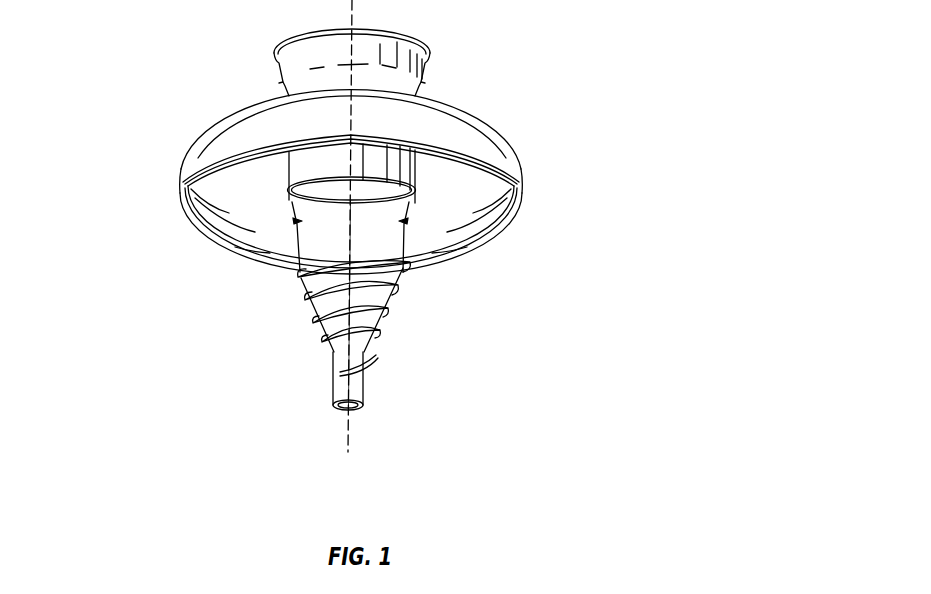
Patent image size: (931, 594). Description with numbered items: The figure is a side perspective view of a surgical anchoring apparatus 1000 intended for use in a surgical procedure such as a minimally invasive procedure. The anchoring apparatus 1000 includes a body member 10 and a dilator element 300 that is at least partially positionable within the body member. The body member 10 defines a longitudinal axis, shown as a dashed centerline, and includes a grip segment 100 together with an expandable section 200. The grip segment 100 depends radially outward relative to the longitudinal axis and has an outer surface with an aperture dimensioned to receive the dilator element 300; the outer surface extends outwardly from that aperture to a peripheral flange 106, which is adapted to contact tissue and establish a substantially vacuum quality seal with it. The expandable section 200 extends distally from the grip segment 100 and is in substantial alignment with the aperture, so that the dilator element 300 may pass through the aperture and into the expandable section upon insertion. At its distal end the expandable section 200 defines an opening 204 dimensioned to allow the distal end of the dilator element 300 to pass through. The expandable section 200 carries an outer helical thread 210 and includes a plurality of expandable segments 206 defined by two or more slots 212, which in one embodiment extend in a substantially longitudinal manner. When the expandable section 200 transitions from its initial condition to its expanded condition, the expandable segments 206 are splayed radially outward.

The surgical anchoring apparatus 1000 is at (132, 52).
The body member 10 is at (567, 168).
The dilator element 300 is at (446, 45).
The grip segment 100 is at (485, 107).
The peripheral flange 106 is at (497, 237).
The expandable section 200 is at (393, 303).
The outer helical thread 210 is at (293, 279).
The slots 212 is at (310, 308).
The opening 204 is at (315, 334).
The expandable segments 206 is at (366, 385).